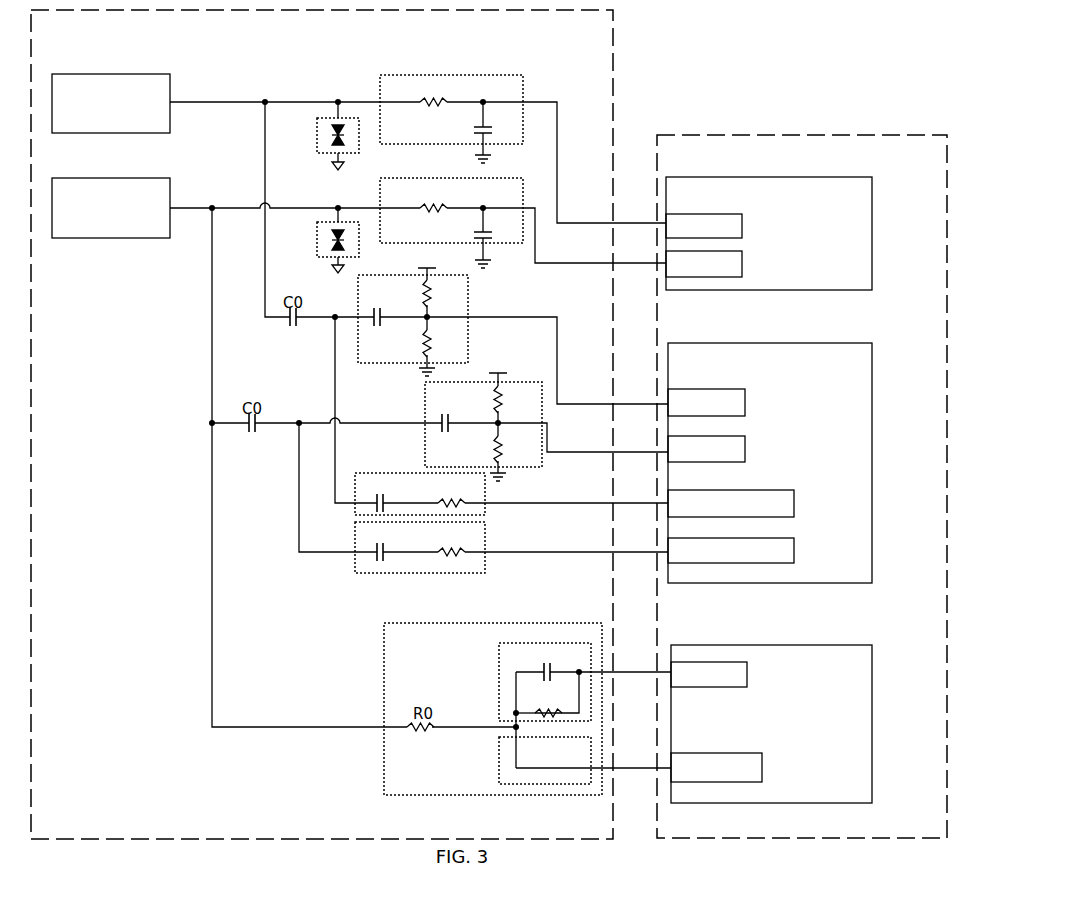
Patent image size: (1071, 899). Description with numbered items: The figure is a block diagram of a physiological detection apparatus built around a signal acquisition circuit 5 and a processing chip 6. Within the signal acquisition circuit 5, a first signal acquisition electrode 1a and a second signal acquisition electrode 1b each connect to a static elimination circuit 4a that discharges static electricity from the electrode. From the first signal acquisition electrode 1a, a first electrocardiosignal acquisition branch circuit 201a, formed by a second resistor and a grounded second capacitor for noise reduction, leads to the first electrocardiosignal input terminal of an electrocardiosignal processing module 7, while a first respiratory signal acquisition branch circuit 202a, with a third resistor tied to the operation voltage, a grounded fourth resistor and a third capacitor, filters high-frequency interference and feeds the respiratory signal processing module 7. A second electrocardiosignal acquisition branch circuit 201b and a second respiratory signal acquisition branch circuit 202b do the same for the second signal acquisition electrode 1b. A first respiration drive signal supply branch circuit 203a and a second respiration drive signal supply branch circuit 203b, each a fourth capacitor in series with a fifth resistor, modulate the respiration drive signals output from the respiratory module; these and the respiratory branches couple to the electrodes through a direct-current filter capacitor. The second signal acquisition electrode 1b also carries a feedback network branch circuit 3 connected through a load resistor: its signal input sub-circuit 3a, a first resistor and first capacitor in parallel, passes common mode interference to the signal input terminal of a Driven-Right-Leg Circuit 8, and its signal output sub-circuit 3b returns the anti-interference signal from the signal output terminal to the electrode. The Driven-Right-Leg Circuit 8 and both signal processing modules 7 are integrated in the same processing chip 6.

The first signal acquisition electrode 1a is at (118, 74).
The second signal acquisition electrode 1b is at (118, 178).
The electrostatic protection unit (TVS diode) 4a is at (317, 132).
The first electrocardiosignal acquisition branch circuit 201a is at (535, 79).
The second electrocardiosignal acquisition branch circuit 201b is at (535, 178).
The first respiratory signal acquisition branch circuit 202a is at (468, 305).
The second respiratory signal acquisition branch circuit 202b is at (425, 400).
The first respiration drive signal supply branch circuit 203a is at (485, 490).
The second respiration drive signal supply branch circuit 203b is at (485, 538).
The feedback network branch circuit 3 is at (527, 693).
The signal input sub-circuit 3a is at (499, 662).
The signal output sub-circuit 3b is at (499, 755).
The signal acquisition circuit 5 is at (613, 41).
The processing chip 6 is at (826, 135).
The signal processing module 7 is at (872, 236).
The Driven-Right-Leg Circuit 8 is at (872, 704).